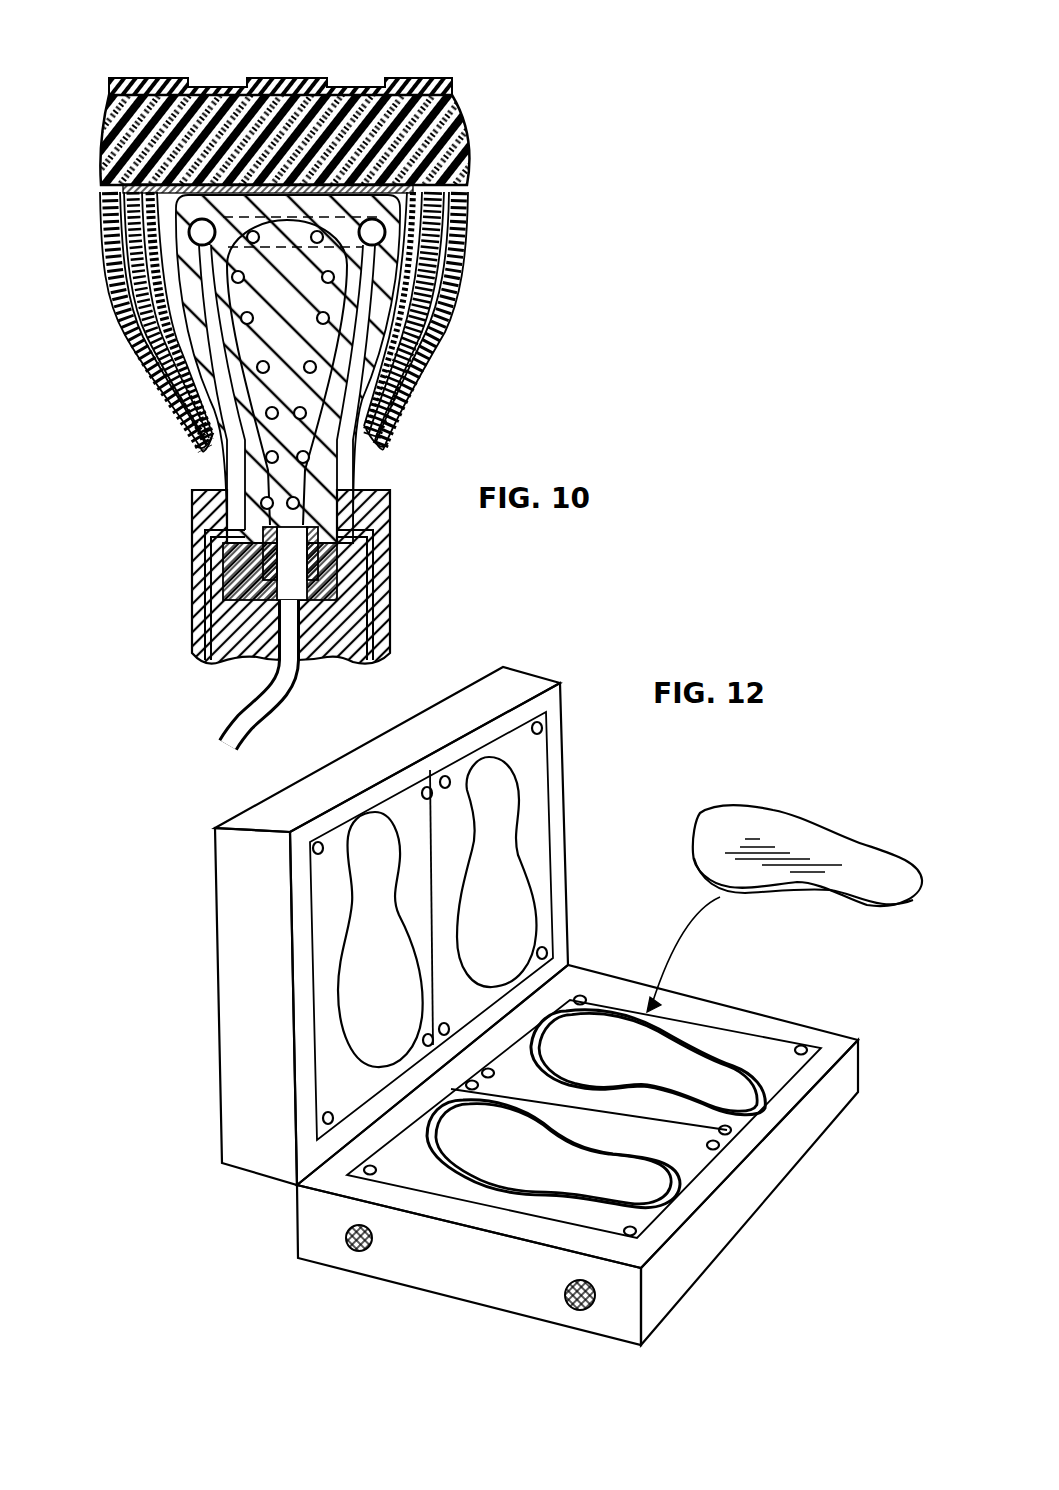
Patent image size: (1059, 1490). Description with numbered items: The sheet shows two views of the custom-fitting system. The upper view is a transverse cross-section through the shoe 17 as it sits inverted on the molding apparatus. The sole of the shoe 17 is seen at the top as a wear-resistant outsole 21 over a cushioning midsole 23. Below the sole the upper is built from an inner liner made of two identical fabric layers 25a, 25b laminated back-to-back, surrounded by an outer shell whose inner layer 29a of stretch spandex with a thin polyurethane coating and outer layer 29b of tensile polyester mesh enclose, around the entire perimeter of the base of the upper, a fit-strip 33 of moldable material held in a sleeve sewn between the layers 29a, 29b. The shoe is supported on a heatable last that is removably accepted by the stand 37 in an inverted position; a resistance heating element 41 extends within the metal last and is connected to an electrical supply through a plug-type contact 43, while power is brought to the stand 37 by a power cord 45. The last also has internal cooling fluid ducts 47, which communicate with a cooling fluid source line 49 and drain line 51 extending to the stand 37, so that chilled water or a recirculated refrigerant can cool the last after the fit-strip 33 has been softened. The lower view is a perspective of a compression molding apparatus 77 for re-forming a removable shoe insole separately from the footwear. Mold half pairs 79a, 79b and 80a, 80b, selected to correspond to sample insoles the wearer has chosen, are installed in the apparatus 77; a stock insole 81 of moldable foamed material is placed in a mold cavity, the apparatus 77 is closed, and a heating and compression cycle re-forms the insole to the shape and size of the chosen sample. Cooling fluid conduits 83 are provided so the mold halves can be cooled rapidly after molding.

In FIG. 10, the shoe 17 is at (495, 263).
In FIG. 10, the wear-resistant outsole 21 is at (277, 72).
In FIG. 10, the cushioning midsole 23 is at (463, 157).
In FIG. 10, the inner layer 29a is at (100, 202).
In FIG. 10, the outer layer 29b is at (112, 231).
In FIG. 10, the fit-strip 33 is at (107, 243).
In FIG. 10, the resistance heating element 41 is at (237, 352).
In FIG. 10, the internal cooling fluid ducts 47 is at (227, 387).
In FIG. 10, the fabric layer 25a is at (187, 423).
In FIG. 10, the fabric layer 25b is at (210, 447).
In FIG. 10, the stand 37 is at (347, 463).
In FIG. 10, the cooling fluid drain line 51 is at (203, 547).
In FIG. 10, the cooling fluid source line 49 is at (360, 560).
In FIG. 10, the plug-type contact 43 is at (247, 575).
In FIG. 10, the power cord 45 is at (247, 698).
In FIG. 12, the compression molding apparatus 77 is at (205, 968).
In FIG. 12, the mold half 79a is at (335, 1072).
In FIG. 12, the mold half 79b is at (584, 1216).
In FIG. 12, the mold half 80a is at (520, 778).
In FIG. 12, the mold half 80b is at (772, 1048).
In FIG. 12, the stock insole 81 is at (820, 827).
In FIG. 12, the cooling fluid conduits 83 is at (368, 1250).